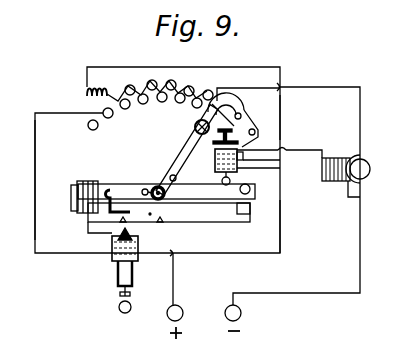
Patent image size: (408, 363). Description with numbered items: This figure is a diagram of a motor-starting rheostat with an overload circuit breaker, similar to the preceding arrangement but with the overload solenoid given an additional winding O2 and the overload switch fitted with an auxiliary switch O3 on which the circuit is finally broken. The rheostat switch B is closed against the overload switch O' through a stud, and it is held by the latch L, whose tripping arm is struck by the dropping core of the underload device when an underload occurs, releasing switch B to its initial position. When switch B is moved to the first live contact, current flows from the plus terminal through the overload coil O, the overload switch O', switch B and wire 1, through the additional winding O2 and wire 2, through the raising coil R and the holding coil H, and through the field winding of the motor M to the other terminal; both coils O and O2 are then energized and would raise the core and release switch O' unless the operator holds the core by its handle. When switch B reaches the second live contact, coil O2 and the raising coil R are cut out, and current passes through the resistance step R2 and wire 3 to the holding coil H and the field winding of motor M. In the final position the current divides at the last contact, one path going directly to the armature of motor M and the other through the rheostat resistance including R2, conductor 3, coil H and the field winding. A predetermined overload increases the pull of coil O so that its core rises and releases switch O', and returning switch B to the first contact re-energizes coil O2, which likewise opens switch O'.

The rheostat resistance step R2 is at (87, 91).
The wire 1 is at (35, 176).
The wire 2 is at (280, 243).
The wire 3 is at (286, 117).
The switch B is at (193, 148).
The latch L is at (236, 120).
The holding coil H is at (215, 157).
The raising coil R is at (215, 170).
The motor M is at (340, 158).
The overload switch O' is at (163, 188).
The overload coil O is at (125, 224).
The additional winding O2 is at (119, 306).
The auxiliary switch O3 is at (169, 212).